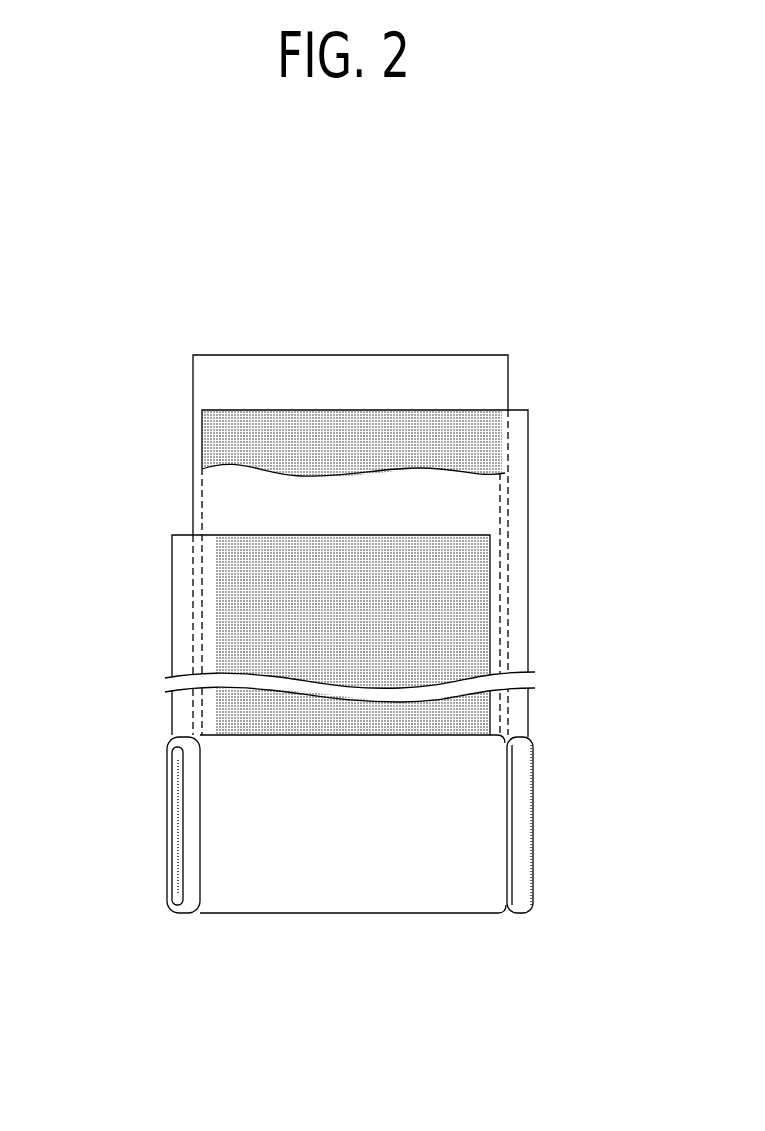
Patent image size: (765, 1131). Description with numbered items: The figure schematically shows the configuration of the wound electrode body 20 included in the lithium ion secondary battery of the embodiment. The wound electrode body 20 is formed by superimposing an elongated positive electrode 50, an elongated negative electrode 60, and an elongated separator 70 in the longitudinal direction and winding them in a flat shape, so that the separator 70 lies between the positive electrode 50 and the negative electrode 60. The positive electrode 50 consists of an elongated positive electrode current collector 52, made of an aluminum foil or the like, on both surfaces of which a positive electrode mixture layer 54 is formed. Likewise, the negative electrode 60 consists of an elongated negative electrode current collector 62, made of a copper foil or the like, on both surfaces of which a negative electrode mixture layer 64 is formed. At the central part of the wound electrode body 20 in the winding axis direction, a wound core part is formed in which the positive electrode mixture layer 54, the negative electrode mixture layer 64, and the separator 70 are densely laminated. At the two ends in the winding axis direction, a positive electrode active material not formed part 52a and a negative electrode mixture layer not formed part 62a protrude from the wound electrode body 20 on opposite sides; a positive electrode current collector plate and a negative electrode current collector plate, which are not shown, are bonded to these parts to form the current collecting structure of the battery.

The wound electrode body 20 is at (408, 897).
The positive electrode 50 is at (293, 724).
The positive electrode current collector 52 is at (172, 665).
The positive electrode active material not formed part 52a is at (190, 815).
The positive electrode mixture layer 54 is at (225, 548).
The negative electrode 60 is at (422, 660).
The negative electrode current collector 62 is at (530, 580).
The negative electrode mixture layer not formed part 62a is at (517, 551).
The negative electrode mixture layer 64 is at (495, 433).
The separator 70 is at (213, 375).